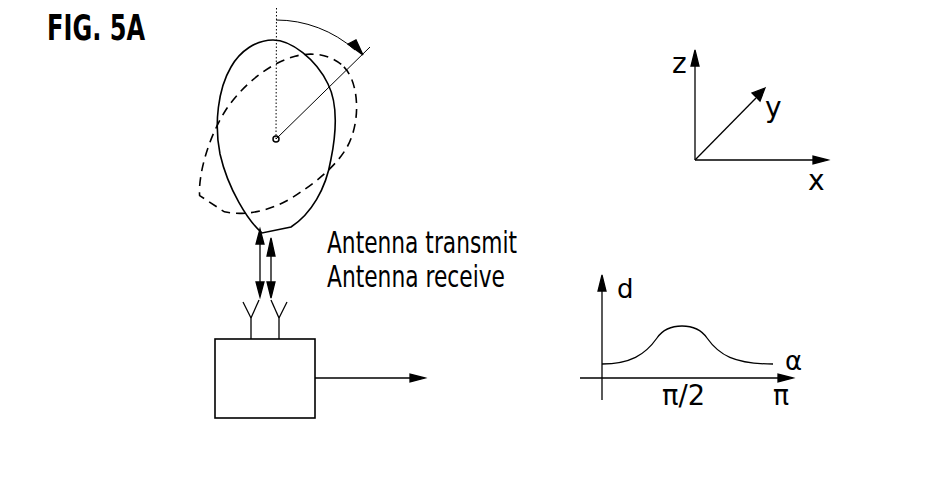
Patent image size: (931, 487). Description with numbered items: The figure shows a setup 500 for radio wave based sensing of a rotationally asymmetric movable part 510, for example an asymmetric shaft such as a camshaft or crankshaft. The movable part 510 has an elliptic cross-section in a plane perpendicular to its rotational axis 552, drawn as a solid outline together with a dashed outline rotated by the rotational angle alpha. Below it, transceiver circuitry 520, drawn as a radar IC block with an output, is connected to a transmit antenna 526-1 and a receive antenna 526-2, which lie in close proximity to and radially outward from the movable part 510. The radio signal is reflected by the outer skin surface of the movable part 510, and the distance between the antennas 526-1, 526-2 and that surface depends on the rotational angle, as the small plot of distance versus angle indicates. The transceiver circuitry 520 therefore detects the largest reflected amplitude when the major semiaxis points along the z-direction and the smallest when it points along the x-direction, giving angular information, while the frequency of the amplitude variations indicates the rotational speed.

The setup 500 is at (491, 91).
The movable part 510 is at (331, 113).
The rotational axis 552 is at (273, 139).
The transceiver circuitry 520 is at (215, 390).
The transmit antenna 526-1 is at (279, 321).
The receive antenna 526-2 is at (251, 321).